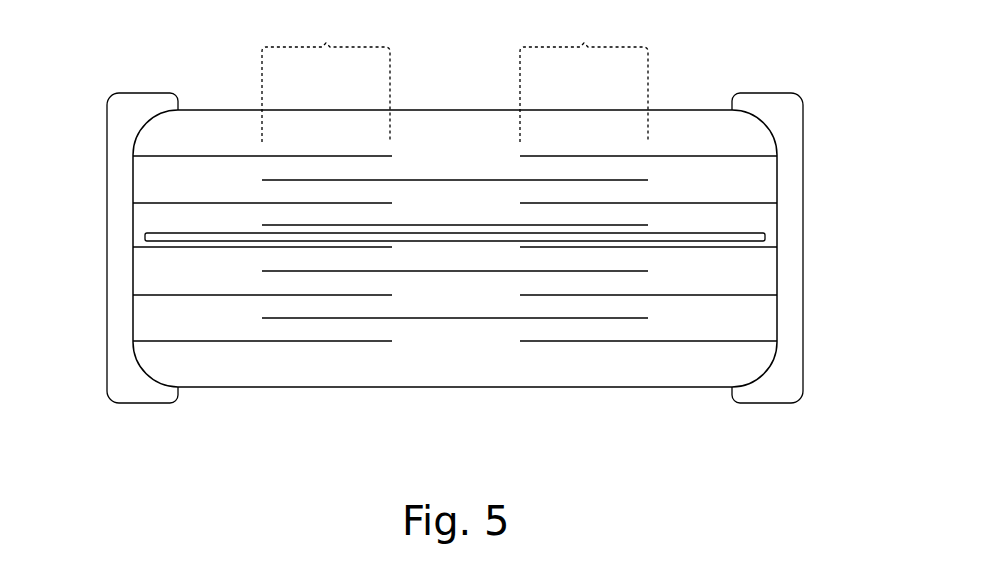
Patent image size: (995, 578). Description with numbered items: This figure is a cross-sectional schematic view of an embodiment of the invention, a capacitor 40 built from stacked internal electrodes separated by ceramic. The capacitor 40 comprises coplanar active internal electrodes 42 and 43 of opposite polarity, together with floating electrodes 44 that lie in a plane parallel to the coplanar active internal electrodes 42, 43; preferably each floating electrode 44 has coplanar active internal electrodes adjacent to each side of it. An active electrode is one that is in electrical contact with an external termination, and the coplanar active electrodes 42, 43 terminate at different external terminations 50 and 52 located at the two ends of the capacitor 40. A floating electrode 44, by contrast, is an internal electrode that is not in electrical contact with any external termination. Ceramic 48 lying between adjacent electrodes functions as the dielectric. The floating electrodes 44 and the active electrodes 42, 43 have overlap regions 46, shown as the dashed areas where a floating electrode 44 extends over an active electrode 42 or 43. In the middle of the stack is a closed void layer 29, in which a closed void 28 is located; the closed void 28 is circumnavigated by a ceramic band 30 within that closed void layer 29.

The closed void 28 is at (538, 240).
The closed void layer 29 is at (75, 261).
The ceramic band 30 is at (145, 237).
The capacitor 40 is at (785, 421).
The active internal electrode 42 is at (222, 203).
The active internal electrode 43 is at (665, 203).
The floating electrode 44 is at (487, 223).
The overlap region 46 is at (455, 80).
The ceramic 48 is at (447, 203).
The external termination 50 is at (120, 160).
The external termination 52 is at (775, 113).